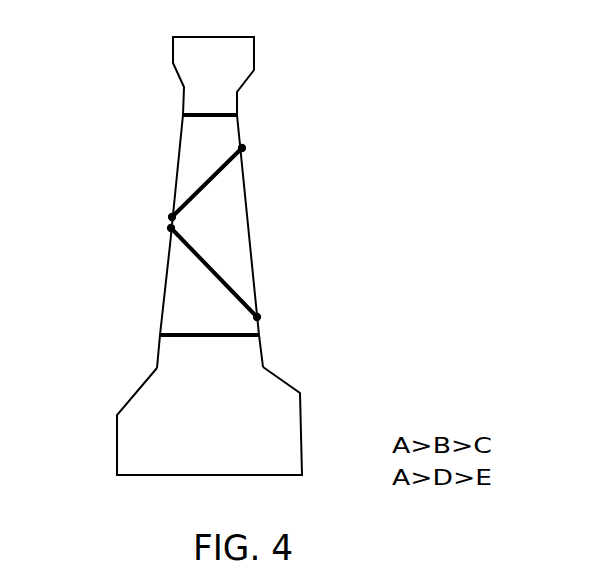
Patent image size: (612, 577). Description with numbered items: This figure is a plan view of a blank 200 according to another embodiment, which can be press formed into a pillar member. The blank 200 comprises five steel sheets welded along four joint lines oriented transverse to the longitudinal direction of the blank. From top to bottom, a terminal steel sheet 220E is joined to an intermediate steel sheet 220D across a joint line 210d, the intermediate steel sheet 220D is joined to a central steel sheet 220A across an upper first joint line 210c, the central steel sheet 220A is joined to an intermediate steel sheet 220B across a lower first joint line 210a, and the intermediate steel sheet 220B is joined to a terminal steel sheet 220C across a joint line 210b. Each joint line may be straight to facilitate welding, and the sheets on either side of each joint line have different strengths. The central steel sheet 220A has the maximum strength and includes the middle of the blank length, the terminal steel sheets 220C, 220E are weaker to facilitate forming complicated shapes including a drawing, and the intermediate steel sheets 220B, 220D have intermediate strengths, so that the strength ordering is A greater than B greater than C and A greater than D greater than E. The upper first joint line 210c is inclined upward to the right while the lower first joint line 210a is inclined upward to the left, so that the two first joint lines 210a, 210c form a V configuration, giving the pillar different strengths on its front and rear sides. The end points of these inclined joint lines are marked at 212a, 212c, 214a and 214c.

The blank 200 is at (221, 243).
The lower first joint line 210a is at (225, 283).
The joint line 210b is at (228, 336).
The upper first joint line 210c is at (229, 166).
The joint line 210d is at (236, 113).
The first end point 212a is at (171, 228).
The second end point 212c is at (172, 217).
The third end point 214a is at (257, 317).
The fourth end point 214c is at (242, 148).
The central steel sheet 220A is at (236, 222).
The intermediate steel sheet 220B is at (187, 298).
The terminal steel sheet 220C is at (138, 443).
The intermediate steel sheet 220D is at (197, 150).
The terminal steel sheet 220E is at (197, 57).